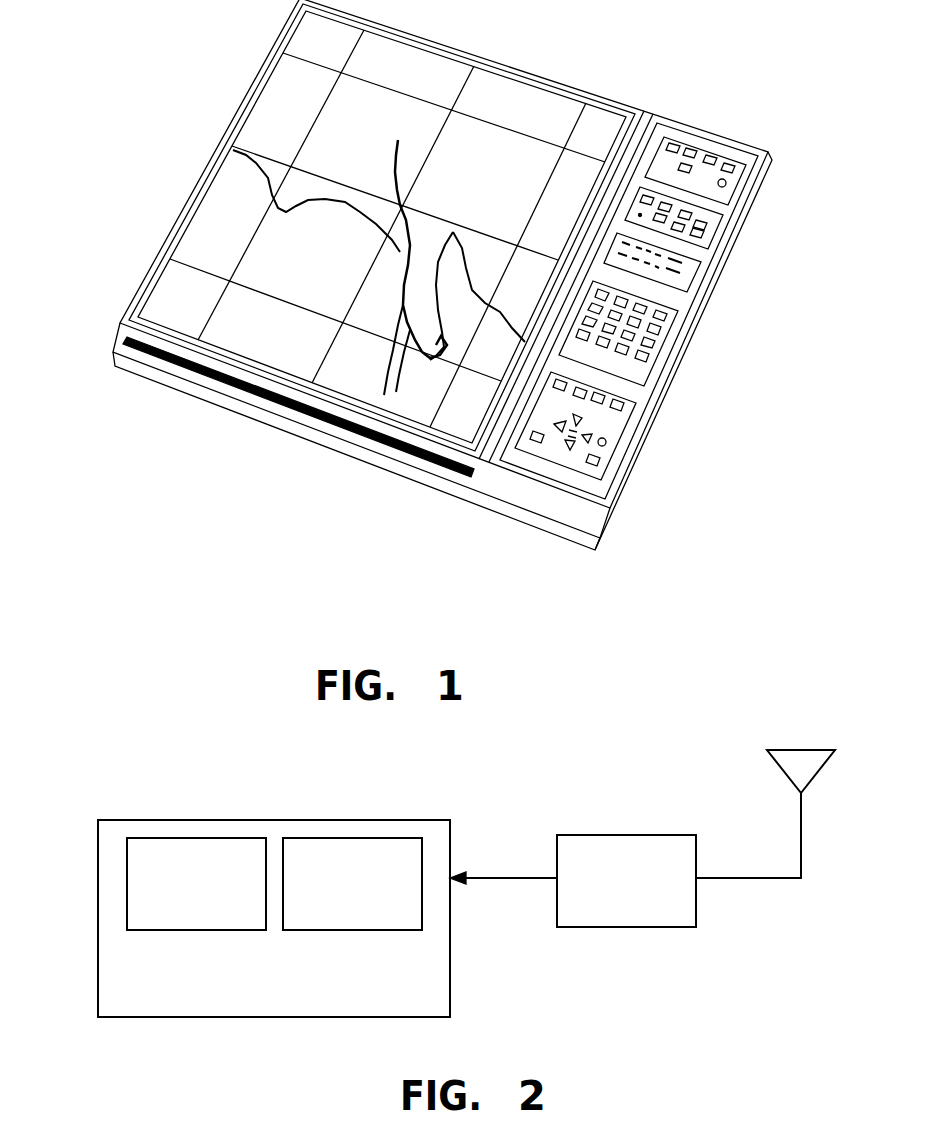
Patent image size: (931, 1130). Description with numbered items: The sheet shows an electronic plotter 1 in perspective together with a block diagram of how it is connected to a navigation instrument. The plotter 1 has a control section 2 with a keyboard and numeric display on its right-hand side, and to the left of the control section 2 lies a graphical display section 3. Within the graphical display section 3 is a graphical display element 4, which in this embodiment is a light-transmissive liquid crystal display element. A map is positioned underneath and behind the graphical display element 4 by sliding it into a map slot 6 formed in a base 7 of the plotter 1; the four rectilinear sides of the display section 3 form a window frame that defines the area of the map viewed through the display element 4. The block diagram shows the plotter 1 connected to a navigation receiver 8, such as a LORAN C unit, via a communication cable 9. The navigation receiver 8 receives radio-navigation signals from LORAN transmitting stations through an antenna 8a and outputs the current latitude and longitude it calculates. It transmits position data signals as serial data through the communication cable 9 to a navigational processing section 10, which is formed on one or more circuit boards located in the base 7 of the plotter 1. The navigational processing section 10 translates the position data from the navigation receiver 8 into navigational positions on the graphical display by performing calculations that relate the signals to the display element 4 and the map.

In FIG. 1, the electronic plotter 1 is at (590, 70).
In FIG. 2, the electronic plotter 1 is at (243, 1018).
In FIG. 1, the control section 2 is at (690, 309).
In FIG. 1, the graphical display section 3 is at (284, 118).
In FIG. 1, the graphical display element 4 is at (309, 272).
In FIG. 2, the graphical display element 4 is at (127, 860).
In FIG. 1, the map slot 6 is at (468, 478).
In FIG. 1, the base 7 is at (565, 512).
In FIG. 2, the navigation receiver 8 is at (605, 835).
In FIG. 2, the antenna 8a is at (818, 775).
In FIG. 2, the communication cable 9 is at (497, 876).
In FIG. 2, the navigational processing section 10 is at (376, 838).